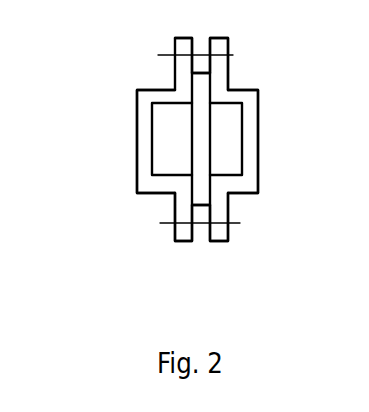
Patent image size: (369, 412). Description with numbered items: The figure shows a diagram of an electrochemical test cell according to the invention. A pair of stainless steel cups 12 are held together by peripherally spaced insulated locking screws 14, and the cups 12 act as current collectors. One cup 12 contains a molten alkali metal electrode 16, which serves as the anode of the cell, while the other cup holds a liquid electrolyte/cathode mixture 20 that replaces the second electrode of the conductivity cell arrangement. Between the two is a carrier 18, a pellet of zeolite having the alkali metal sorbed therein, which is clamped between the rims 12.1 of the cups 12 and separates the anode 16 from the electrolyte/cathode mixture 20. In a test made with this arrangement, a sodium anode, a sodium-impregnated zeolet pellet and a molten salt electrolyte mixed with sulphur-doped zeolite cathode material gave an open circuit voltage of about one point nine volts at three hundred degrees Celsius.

The stainless steel cup 12 is at (140, 166).
The rim 12.1 is at (220, 64).
The insulated locking screw 14 is at (132, 57).
The alkali metal electrode 16 is at (160, 120).
The carrier 18 is at (202, 195).
The liquid electrolyte/cathode mixture 20 is at (233, 127).